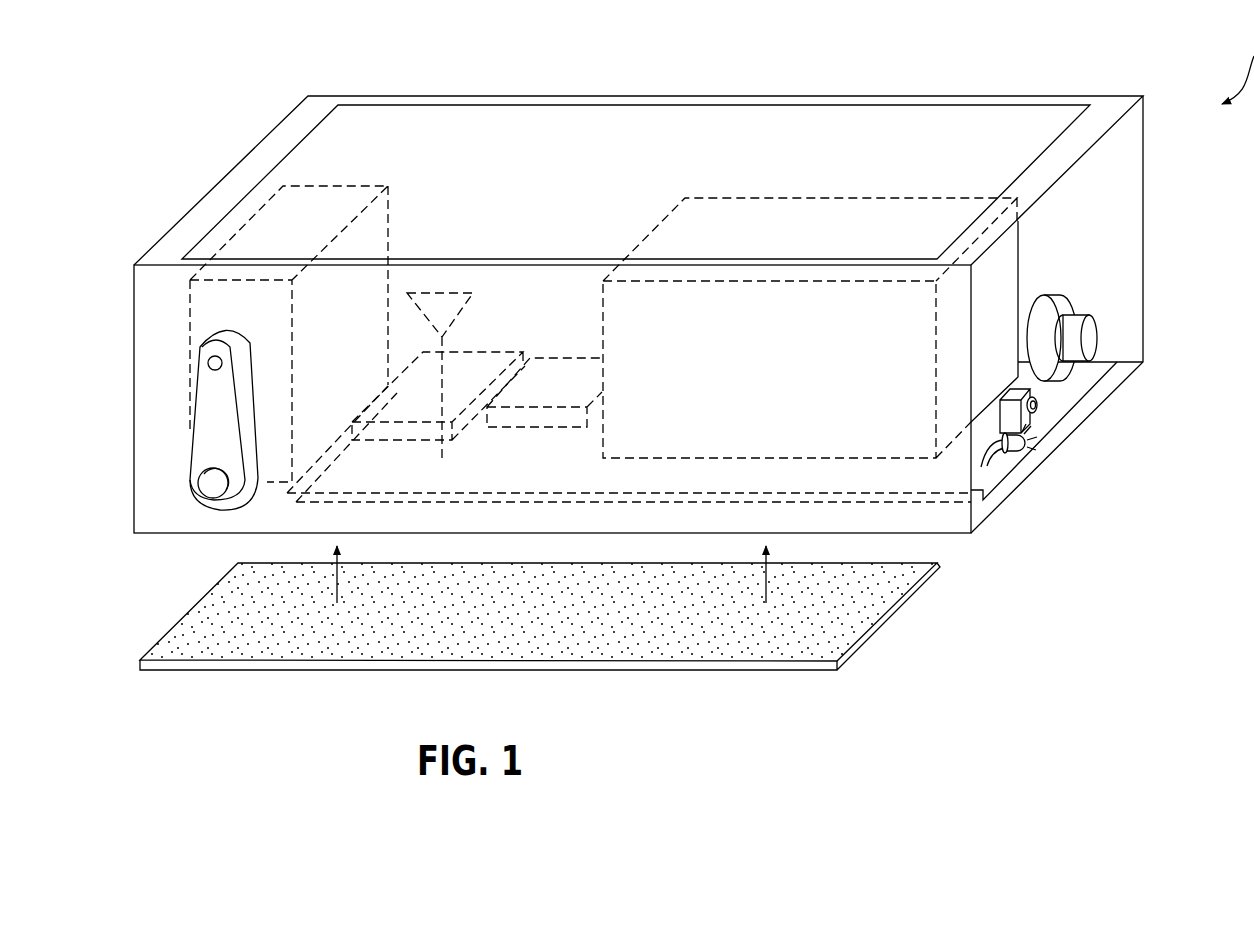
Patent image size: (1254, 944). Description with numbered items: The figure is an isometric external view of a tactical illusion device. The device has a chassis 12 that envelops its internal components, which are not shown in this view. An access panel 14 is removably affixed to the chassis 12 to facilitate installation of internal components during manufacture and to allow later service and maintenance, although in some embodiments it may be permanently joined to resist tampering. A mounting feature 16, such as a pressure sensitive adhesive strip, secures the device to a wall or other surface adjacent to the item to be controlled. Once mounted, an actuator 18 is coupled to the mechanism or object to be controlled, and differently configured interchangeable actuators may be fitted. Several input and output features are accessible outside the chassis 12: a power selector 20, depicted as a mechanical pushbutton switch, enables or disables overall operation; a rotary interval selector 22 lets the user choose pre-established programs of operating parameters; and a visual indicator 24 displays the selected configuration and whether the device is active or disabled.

The chassis 12 is at (267, 130).
The access panel 14 is at (224, 215).
The mounting feature 16 is at (897, 610).
The actuator 18 is at (197, 362).
The power selector 20 is at (1038, 405).
The interval selector 22 is at (1092, 338).
The visual indicator 24 is at (1022, 443).